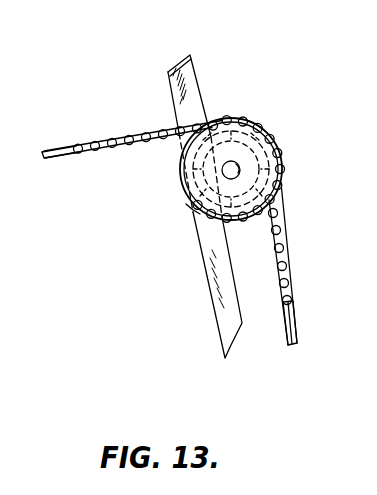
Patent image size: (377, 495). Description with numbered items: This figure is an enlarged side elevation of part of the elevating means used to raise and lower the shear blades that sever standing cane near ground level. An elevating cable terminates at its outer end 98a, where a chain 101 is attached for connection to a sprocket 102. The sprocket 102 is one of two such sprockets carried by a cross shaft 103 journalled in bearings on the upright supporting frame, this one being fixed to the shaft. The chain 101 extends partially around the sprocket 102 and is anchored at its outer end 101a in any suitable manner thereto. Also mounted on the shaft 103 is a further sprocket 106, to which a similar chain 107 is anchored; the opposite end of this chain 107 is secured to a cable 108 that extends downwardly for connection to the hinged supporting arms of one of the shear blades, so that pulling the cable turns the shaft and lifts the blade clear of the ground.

The outer end of cable 98a is at (60, 157).
The chain 101 is at (121, 137).
The outer end of chain 101a is at (189, 203).
The sprocket 102 is at (188, 224).
The cross shaft 103 is at (222, 171).
The sprocket 106 is at (238, 118).
The chain 107 is at (271, 242).
The cable 108 is at (287, 325).